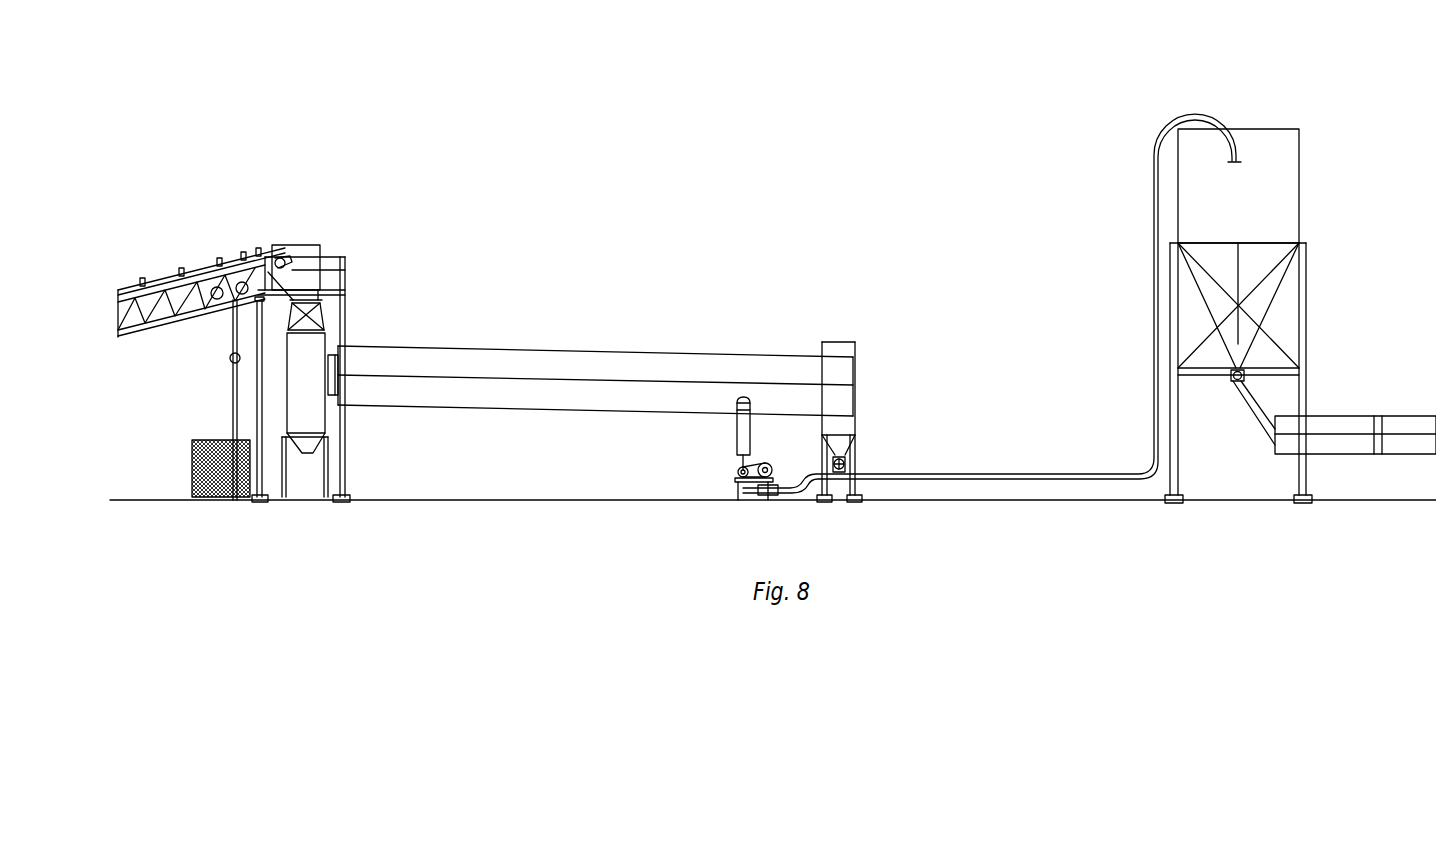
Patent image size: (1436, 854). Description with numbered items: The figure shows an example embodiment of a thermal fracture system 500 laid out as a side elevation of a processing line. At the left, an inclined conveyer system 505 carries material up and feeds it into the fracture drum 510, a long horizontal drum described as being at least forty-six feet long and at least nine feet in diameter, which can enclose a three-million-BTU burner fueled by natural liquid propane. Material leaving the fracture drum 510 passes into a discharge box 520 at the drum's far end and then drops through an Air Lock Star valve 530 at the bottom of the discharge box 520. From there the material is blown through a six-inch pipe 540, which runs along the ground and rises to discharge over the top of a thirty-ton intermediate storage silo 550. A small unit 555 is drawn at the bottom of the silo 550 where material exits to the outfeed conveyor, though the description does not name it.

The thermal fracture system 500 is at (701, 100).
The conveyer system 505 is at (194, 256).
The fracture drum 510 is at (541, 343).
The discharge box 520 is at (842, 330).
The Air Lock Star valve 530 is at (846, 462).
The pipe 540 is at (998, 478).
The intermediate storage silo 550 is at (1239, 108).
The silo discharge valve 555 is at (1246, 377).